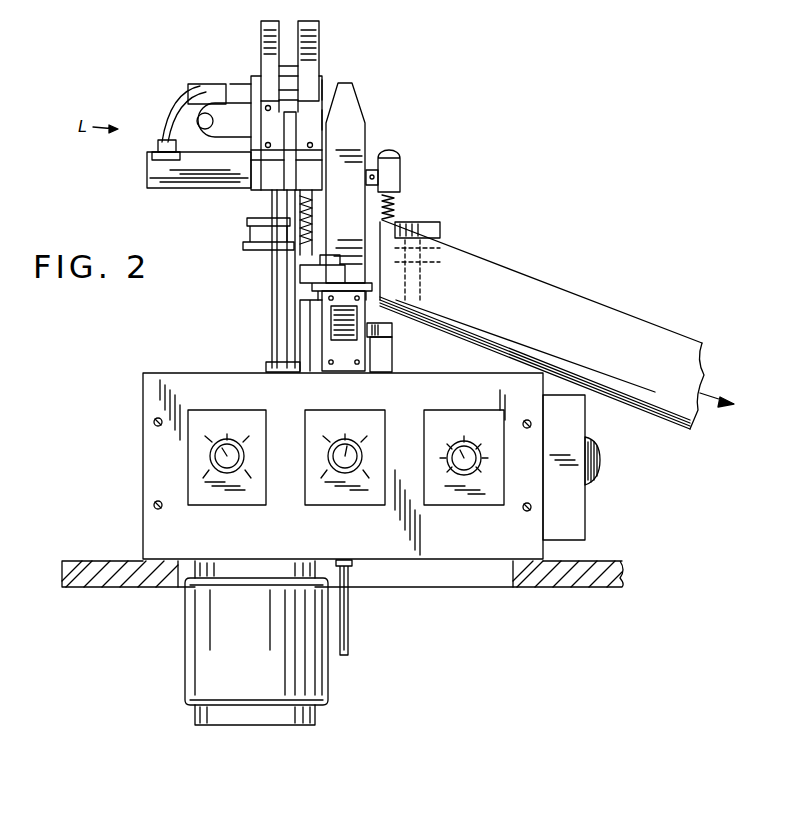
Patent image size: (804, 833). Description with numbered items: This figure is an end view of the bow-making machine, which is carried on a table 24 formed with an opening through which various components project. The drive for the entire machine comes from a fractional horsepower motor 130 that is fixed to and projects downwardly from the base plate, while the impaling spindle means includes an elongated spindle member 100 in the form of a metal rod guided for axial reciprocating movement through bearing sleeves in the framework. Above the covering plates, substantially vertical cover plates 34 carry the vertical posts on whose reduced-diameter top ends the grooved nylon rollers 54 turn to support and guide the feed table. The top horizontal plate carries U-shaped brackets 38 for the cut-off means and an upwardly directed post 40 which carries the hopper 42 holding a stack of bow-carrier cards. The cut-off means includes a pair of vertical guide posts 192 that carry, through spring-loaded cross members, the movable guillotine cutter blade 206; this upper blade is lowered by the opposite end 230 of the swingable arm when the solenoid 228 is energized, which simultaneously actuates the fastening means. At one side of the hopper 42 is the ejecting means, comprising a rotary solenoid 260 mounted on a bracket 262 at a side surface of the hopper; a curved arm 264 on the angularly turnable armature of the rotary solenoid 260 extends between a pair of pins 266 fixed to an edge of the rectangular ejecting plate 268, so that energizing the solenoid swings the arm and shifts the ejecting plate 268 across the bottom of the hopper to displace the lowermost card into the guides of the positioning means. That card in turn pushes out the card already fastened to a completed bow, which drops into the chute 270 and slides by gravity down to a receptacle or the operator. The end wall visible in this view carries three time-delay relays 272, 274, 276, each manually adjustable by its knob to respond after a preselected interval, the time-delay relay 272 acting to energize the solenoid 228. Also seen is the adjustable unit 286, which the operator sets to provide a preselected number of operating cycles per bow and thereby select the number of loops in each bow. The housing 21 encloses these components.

The hopper 42 is at (320, 25).
The opposite end of swingable arm 230 is at (360, 102).
The rotary solenoid 260 is at (201, 84).
The bracket 262 is at (233, 98).
The curved arm 264 is at (162, 138).
The pins 266 is at (152, 150).
The ejecting plate 268 is at (172, 190).
The nylon rollers 54 is at (452, 228).
The movable guillotine cutter blade 206 is at (393, 199).
The vertical guide posts 192 is at (312, 292).
The post 40 is at (268, 313).
The solenoid 228 is at (333, 352).
The vertical cover plates 34 is at (394, 331).
The brackets 38 is at (393, 340).
The chute 270 is at (602, 322).
The time-delay relay 272 is at (241, 401).
The time-delay relay 274 is at (365, 401).
The time-delay relay 276 is at (491, 397).
The adjustable unit 286 is at (585, 541).
The control panel housing 21 is at (506, 556).
The table 24 is at (580, 585).
The spindle member 100 is at (350, 637).
The motor 130 is at (324, 710).